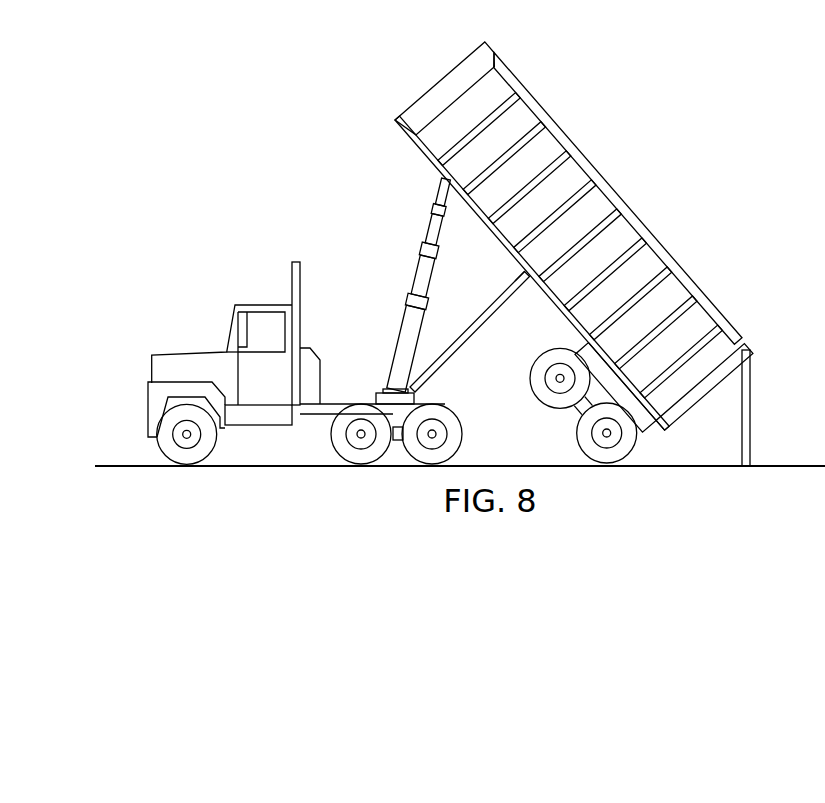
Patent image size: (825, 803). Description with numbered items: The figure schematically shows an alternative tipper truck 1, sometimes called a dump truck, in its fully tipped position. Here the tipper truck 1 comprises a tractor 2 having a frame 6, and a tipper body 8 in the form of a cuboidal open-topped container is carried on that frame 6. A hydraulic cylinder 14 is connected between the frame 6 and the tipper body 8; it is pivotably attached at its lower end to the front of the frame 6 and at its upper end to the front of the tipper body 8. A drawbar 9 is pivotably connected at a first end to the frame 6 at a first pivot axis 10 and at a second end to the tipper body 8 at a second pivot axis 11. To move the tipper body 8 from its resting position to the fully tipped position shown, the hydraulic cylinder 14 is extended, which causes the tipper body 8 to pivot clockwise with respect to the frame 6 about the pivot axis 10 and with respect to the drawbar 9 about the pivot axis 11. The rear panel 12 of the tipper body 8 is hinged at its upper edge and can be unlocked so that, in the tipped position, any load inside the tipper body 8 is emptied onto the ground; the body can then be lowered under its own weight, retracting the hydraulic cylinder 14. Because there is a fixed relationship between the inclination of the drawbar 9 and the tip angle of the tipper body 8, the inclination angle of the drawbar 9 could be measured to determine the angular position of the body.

The tipper truck 1 is at (566, 84).
The tractor 2 is at (253, 287).
The frame 6 is at (308, 414).
The tipper body 8 is at (619, 203).
The drawbar 9 is at (468, 337).
The first pivot axis 10 is at (414, 393).
The second pivot axis 11 is at (527, 278).
The rear panel 12 is at (752, 408).
The hydraulic cylinder 14 is at (410, 283).